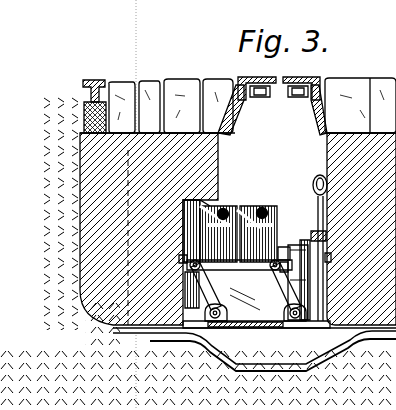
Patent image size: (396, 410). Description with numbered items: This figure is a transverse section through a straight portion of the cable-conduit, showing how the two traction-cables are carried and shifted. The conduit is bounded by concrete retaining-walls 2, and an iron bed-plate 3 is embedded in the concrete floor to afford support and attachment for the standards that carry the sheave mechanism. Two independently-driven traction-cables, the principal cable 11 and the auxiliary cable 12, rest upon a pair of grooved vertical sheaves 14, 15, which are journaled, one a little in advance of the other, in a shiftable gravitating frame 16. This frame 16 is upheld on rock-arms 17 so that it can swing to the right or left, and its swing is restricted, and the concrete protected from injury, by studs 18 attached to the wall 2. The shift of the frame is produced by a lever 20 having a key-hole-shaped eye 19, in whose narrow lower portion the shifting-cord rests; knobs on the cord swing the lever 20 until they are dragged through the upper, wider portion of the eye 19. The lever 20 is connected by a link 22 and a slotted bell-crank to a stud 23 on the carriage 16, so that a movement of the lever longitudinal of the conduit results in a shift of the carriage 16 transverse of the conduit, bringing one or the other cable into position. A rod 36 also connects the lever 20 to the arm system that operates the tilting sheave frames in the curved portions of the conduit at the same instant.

The concrete retaining-wall 2 is at (80, 186).
The iron bed-plate 3 is at (254, 349).
The principal traction-cable 11 is at (264, 206).
The auxiliary traction-cable 12 is at (226, 208).
The grooved vertical sheave 14 is at (268, 222).
The grooved vertical sheave 15 is at (205, 203).
The shiftable gravitating frame 16 is at (239, 265).
The rock-arm 17 is at (256, 295).
The stud 18 is at (332, 258).
The key-hole-shaped eye 19 is at (313, 183).
The lever 20 is at (318, 214).
The link 22 is at (299, 280).
The stud 23 is at (285, 253).
The rod 36 is at (309, 238).